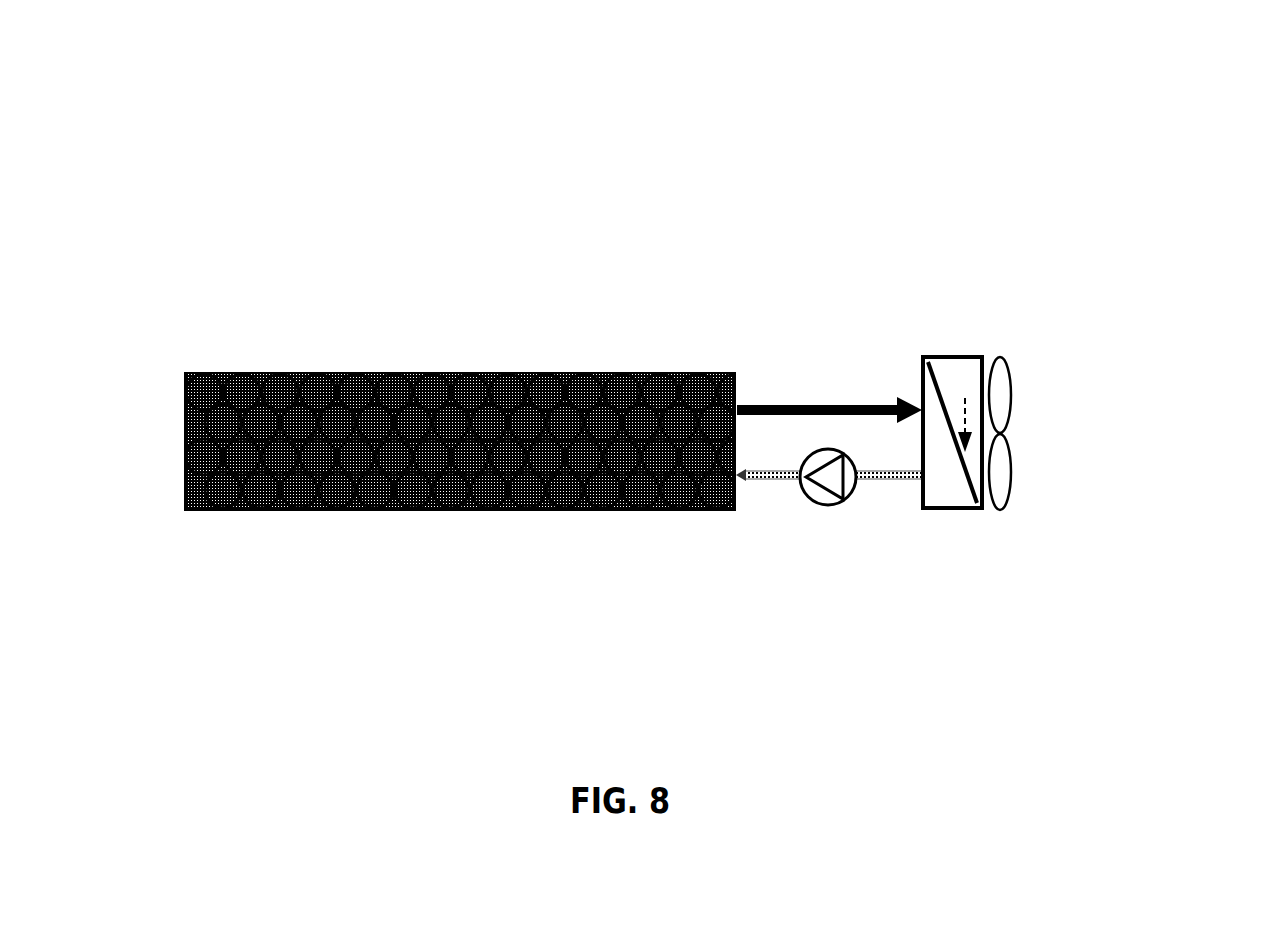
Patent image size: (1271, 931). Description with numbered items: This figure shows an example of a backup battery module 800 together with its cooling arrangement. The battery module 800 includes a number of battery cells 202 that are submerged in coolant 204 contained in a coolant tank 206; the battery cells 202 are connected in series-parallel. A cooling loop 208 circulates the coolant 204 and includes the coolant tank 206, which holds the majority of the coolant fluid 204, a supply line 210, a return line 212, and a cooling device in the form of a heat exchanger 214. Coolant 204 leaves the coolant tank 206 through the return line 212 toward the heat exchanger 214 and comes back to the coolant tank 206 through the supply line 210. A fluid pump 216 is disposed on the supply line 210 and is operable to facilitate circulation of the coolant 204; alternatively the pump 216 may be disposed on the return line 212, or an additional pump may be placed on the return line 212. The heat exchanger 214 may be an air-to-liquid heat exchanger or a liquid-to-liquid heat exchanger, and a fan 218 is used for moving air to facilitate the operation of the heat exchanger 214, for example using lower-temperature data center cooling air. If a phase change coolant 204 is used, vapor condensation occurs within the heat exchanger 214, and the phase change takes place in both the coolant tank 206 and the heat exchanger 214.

The battery module 800 is at (652, 354).
The battery cells 202 is at (455, 420).
The coolant 204 is at (197, 507).
The coolant tank 206 is at (217, 361).
The cooling loop 208 is at (868, 421).
The supply line 210 is at (877, 480).
The return line 212 is at (755, 405).
The heat exchanger 214 is at (945, 486).
The fluid pump 216 is at (798, 506).
The fan 218 is at (1025, 398).